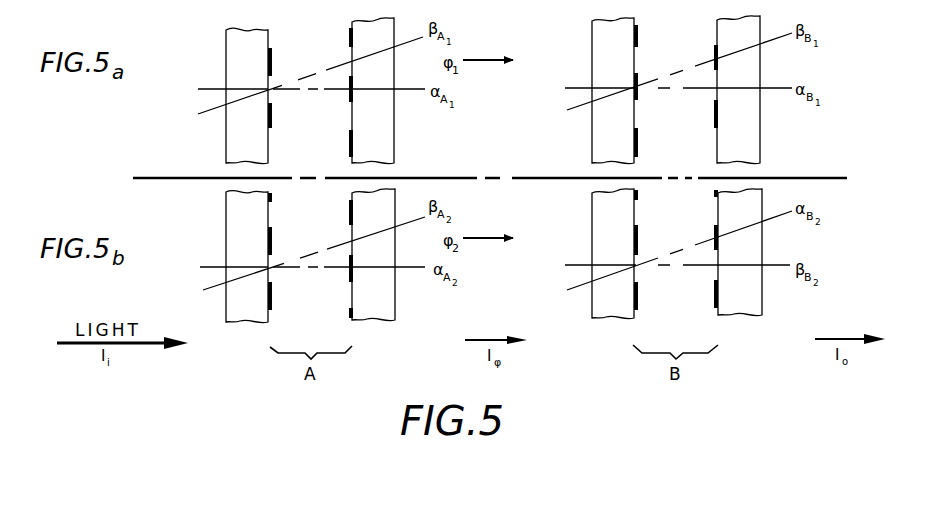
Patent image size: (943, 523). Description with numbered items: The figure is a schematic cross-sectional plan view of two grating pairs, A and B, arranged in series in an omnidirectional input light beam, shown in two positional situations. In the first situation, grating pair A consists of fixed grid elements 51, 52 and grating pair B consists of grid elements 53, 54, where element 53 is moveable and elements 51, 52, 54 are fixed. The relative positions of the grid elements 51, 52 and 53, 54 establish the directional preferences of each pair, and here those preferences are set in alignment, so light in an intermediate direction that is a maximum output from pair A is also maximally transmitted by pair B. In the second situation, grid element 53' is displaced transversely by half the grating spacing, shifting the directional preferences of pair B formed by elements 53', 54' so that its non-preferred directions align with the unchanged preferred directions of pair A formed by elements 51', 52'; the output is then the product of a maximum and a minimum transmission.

In FIG. 5A, the grid element 51 is at (224, 96).
In FIG. 5A, the grid element 52 is at (396, 91).
In FIG. 5A, the grid element 53 is at (587, 91).
In FIG. 5A, the grid element 54 is at (762, 90).
In FIG. 5B, the grid element 51' is at (228, 256).
In FIG. 5B, the grid element 52' is at (398, 255).
In FIG. 5B, the grid element 53' is at (587, 254).
In FIG. 5B, the grid element 54' is at (764, 254).